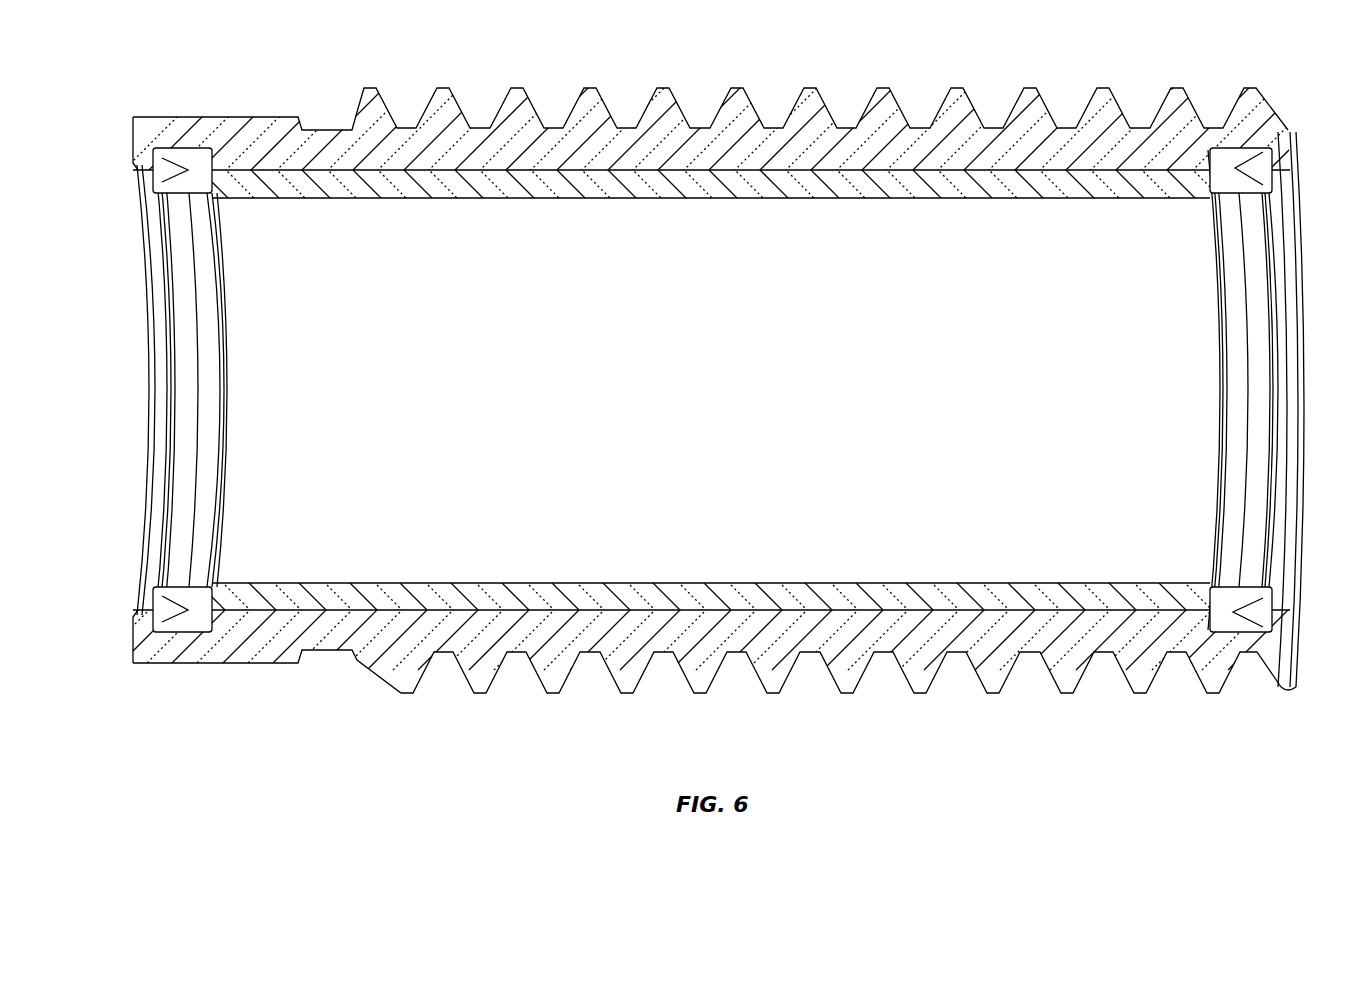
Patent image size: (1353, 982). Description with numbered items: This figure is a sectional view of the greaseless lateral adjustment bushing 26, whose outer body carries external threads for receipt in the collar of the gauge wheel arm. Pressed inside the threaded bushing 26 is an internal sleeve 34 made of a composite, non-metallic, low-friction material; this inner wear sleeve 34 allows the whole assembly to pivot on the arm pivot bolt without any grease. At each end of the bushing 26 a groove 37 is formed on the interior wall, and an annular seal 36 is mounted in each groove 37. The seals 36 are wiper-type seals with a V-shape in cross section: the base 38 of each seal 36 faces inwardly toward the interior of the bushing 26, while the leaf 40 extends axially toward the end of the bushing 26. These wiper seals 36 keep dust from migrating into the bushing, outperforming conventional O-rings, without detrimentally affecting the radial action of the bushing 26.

The lateral adjustment bushing 26 is at (515, 85).
The internal sleeve 34 is at (682, 180).
The annular seal 36 is at (182, 155).
The groove 37 is at (213, 618).
The base 38 is at (192, 630).
The leaf 40 is at (183, 583).